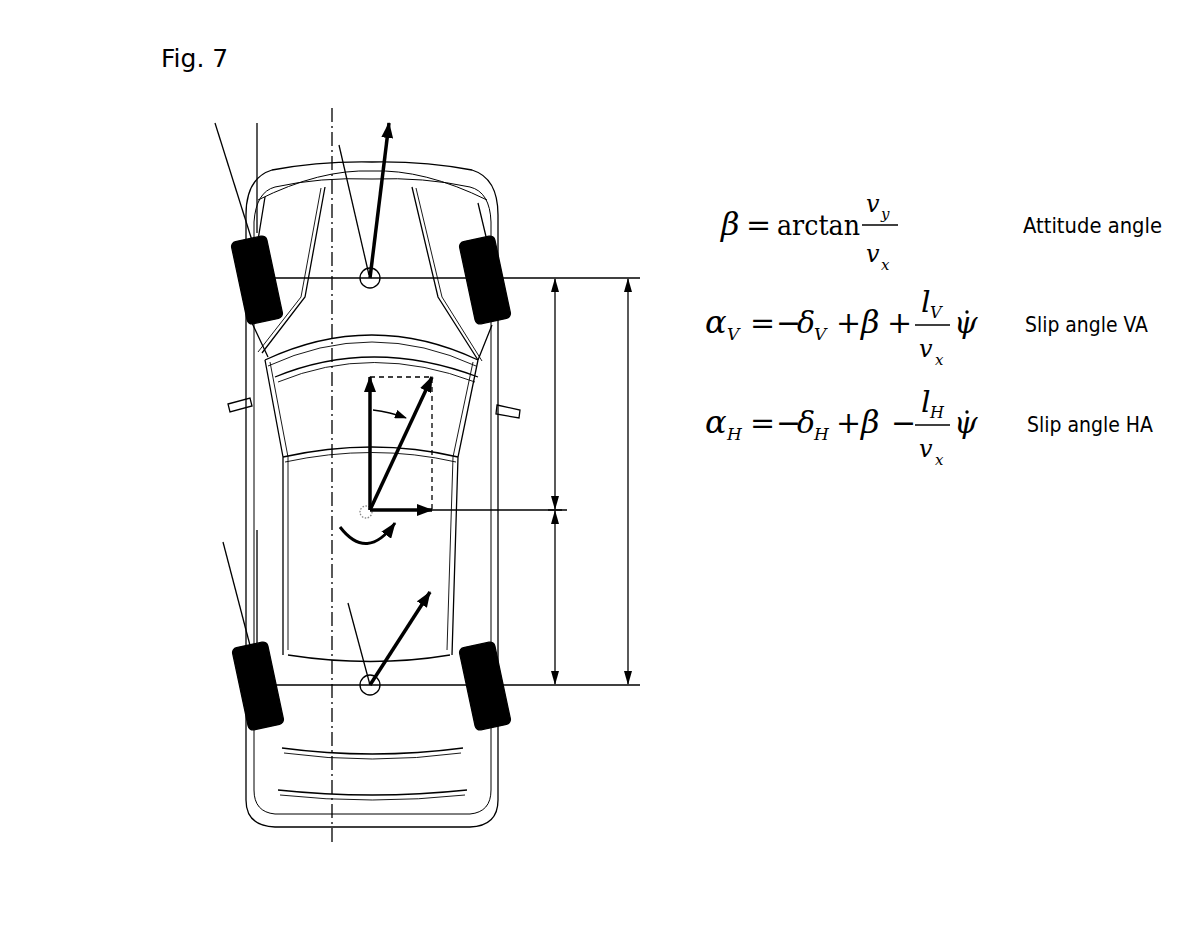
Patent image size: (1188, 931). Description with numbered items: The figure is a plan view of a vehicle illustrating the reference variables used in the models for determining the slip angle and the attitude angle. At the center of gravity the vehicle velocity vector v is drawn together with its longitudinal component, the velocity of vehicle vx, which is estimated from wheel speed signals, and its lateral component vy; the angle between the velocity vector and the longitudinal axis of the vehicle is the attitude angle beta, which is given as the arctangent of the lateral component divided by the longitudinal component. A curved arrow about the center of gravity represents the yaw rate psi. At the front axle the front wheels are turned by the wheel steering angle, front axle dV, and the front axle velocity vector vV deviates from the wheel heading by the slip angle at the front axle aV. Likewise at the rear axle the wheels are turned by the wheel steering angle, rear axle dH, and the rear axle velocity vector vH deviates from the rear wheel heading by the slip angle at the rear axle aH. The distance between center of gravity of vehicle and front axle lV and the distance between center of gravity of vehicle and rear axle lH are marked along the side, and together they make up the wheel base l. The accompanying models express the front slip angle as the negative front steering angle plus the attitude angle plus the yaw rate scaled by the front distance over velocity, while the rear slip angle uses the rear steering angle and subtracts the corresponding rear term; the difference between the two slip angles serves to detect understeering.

The wheel steering angle, front axle dV is at (256, 132).
The slip angle at the front axle aV is at (380, 148).
The front axle velocity vector vV is at (397, 200).
The vehicle velocity vector v is at (413, 441).
The velocity of vehicle vx is at (356, 443).
The lateral velocity component vy is at (401, 495).
The attitude angle beta is at (390, 398).
The yaw rate psi is at (376, 544).
The wheel steering angle, rear axle dH is at (257, 545).
The slip angle at the rear axle aH is at (355, 622).
The rear axle velocity vector vH is at (412, 638).
The distance between center of gravity of vehicle and front axle lV is at (571, 394).
The distance between center of gravity of vehicle and rear axle lH is at (574, 597).
The wheel base l is at (640, 481).